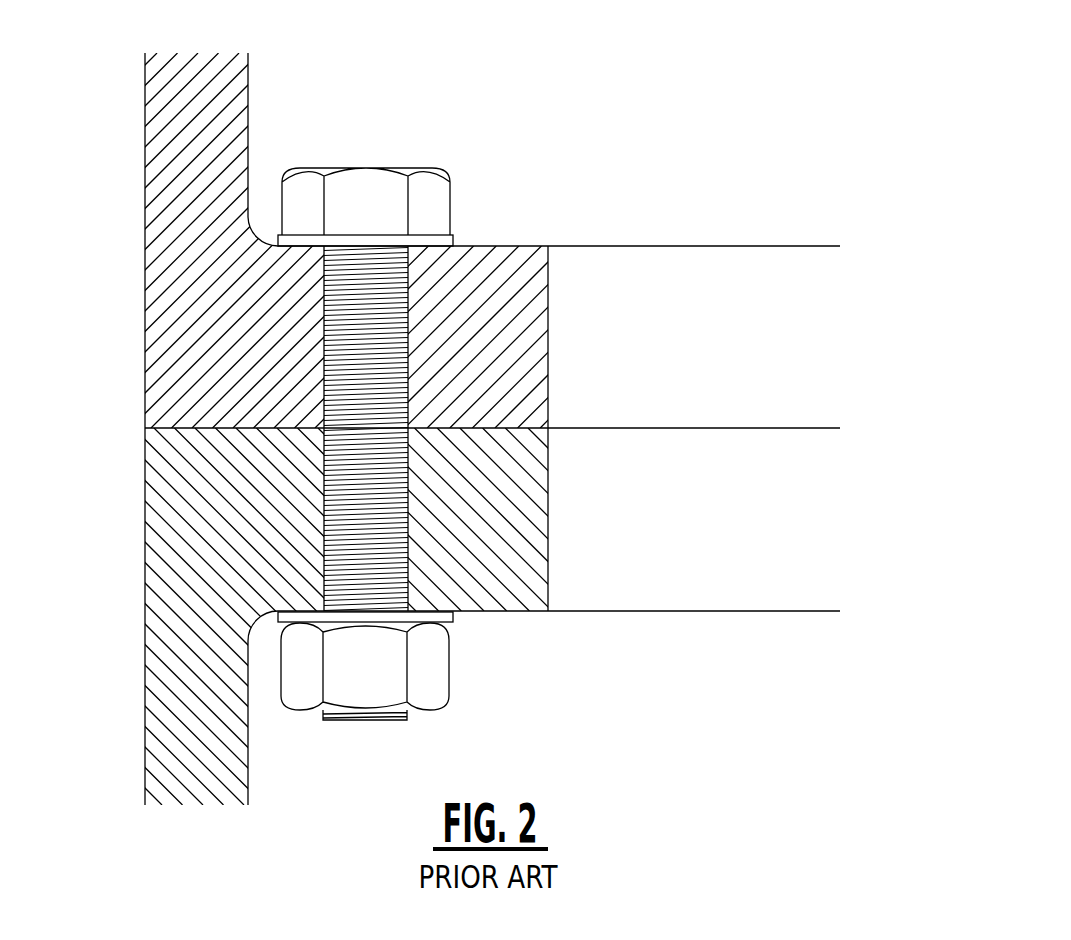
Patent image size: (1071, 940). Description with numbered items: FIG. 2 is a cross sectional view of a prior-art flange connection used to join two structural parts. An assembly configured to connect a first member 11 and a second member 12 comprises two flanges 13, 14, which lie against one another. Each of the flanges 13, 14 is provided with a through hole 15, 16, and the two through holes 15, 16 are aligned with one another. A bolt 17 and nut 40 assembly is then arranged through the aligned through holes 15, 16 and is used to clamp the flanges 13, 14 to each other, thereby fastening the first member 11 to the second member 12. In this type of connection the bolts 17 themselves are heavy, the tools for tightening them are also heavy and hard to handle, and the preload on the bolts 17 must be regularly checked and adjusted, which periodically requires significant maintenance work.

The first member 11 is at (183, 688).
The second member 12 is at (184, 320).
The flange 13 is at (512, 588).
The flange 14 is at (508, 285).
The through hole 15 is at (453, 522).
The through hole 16 is at (448, 365).
The bolt 17 is at (382, 118).
The nut 40 is at (368, 686).